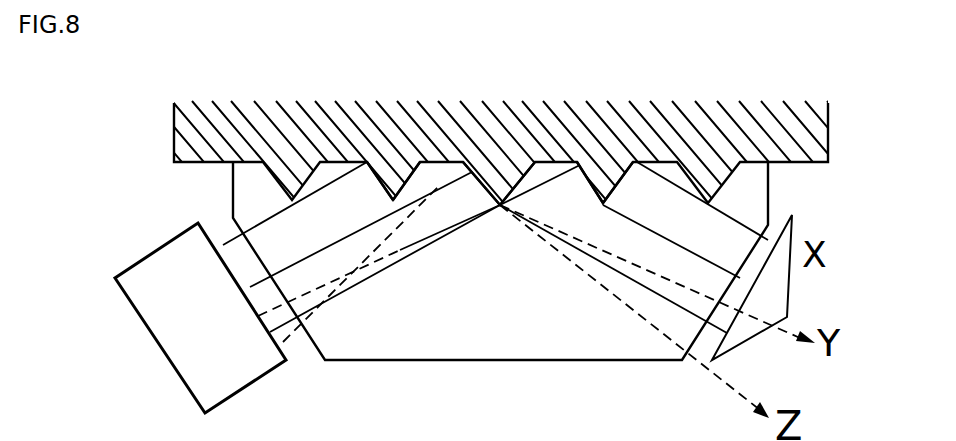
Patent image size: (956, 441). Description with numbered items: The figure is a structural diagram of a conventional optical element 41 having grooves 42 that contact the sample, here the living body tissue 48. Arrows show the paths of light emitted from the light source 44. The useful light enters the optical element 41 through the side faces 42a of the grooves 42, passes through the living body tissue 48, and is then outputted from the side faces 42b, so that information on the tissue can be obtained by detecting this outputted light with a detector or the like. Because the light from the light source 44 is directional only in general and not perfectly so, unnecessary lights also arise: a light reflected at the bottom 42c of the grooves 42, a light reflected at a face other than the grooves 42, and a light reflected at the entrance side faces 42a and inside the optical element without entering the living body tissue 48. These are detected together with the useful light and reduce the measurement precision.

The living body tissue 48 is at (497, 130).
The optical element 41 is at (752, 195).
The grooves 42 is at (640, 200).
The side faces 42a is at (378, 175).
The side faces 42b is at (428, 192).
The bottom 42c is at (497, 224).
The light source 44 is at (163, 343).